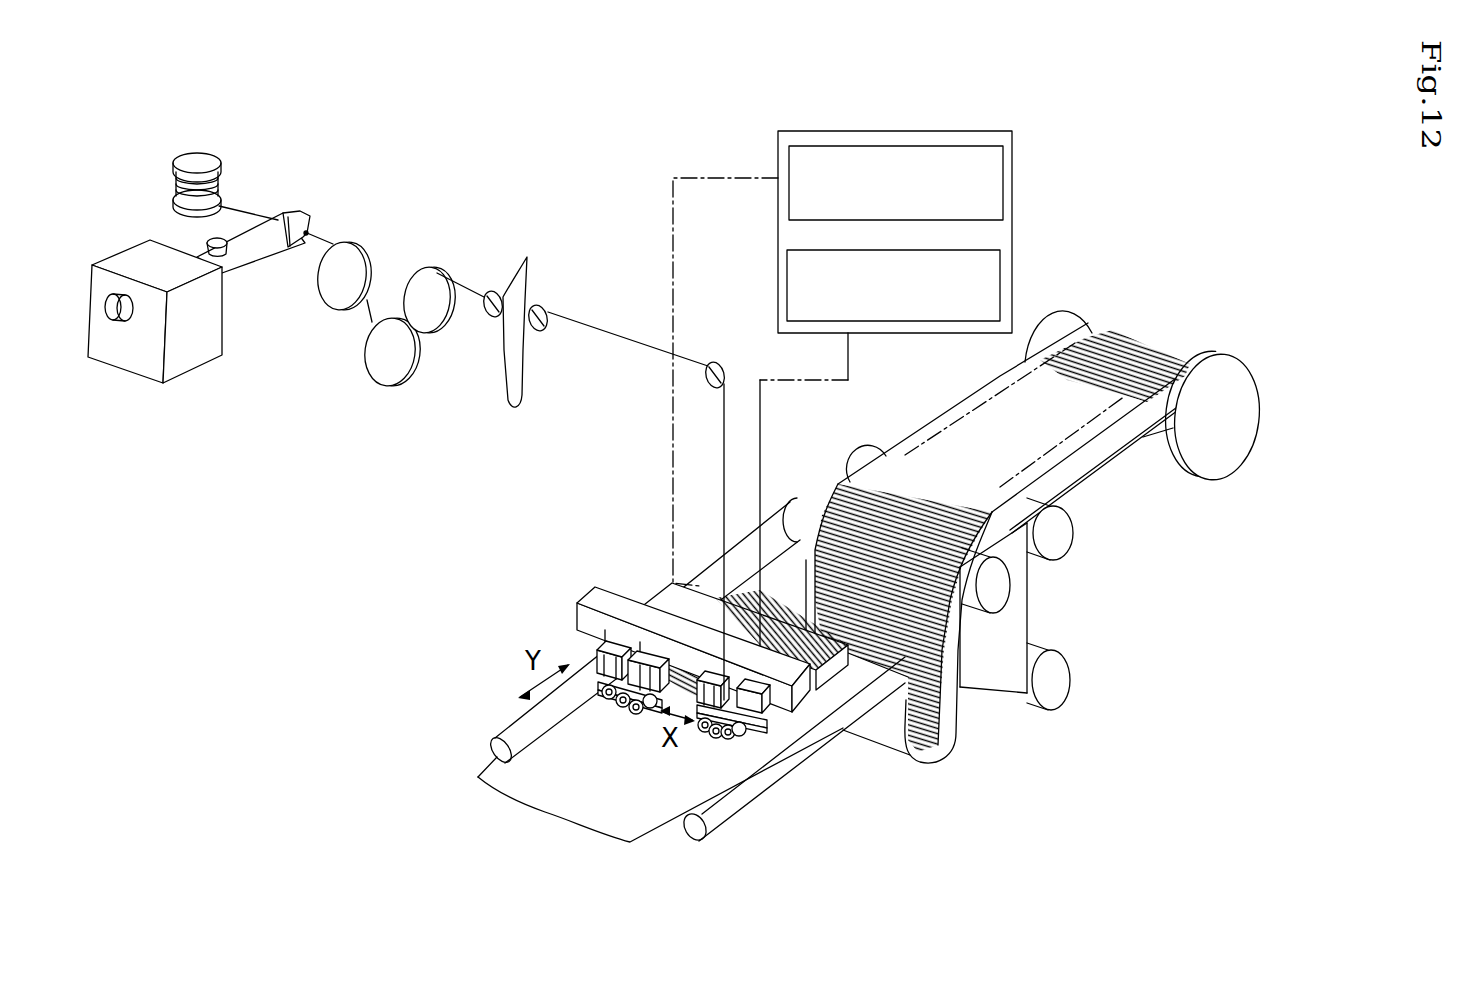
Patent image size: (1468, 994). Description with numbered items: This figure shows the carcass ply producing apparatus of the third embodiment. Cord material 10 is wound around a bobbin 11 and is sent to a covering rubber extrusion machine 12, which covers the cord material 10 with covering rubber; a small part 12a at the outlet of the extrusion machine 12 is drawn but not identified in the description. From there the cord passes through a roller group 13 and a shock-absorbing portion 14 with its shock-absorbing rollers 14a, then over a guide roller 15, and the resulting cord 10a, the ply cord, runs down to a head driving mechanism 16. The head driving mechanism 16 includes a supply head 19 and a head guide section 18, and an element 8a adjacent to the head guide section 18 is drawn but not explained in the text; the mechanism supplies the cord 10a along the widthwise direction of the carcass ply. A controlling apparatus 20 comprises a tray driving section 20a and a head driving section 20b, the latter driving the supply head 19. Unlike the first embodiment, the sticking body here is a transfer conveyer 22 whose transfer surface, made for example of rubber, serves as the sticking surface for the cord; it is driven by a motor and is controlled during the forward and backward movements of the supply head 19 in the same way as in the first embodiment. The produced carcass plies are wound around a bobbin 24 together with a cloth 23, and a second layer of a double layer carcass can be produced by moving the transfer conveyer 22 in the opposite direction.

The guide rail 8a is at (773, 606).
The cord material 10 is at (247, 211).
The cord 10a is at (613, 333).
The bobbin 11 is at (204, 158).
The covering rubber extrusion machine 12 is at (243, 340).
The thread outlet nozzle 12a is at (308, 231).
The roller group 13 is at (401, 251).
The shock-absorbing portion 14 is at (498, 368).
The shock-absorbing rollers 14a is at (526, 258).
The guide roller 15 is at (723, 367).
The head driving mechanism 16 is at (602, 580).
The head guide section 18 is at (637, 605).
The supply head 19 is at (776, 704).
The controlling apparatus 20 is at (944, 195).
The tray driving section 20a is at (1005, 183).
The head driving section 20b is at (1002, 290).
The transfer conveyer 22 is at (737, 773).
The cloth 23 is at (1003, 663).
The bobbin 24 is at (1223, 447).